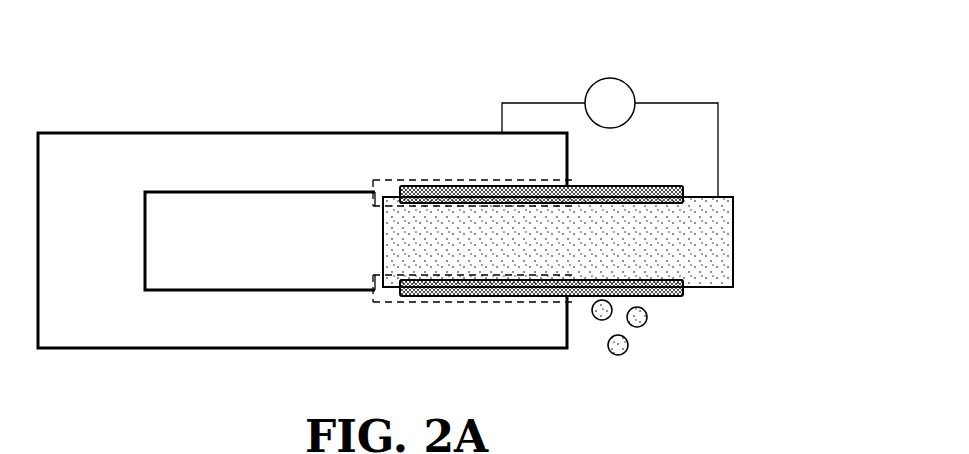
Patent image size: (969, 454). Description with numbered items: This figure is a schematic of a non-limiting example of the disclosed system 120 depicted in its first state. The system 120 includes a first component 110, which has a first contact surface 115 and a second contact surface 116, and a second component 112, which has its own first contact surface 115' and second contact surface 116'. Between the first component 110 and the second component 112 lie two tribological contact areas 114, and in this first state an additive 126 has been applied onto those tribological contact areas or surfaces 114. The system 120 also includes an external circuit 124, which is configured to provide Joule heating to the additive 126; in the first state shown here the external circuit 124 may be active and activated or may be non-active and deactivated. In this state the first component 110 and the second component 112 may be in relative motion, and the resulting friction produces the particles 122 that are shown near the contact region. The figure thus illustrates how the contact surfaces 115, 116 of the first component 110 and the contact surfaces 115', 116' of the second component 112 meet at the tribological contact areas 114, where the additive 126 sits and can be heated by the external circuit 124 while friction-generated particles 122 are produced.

The first component 110 is at (243, 131).
The second component 112 is at (733, 242).
The tribological contact areas 114 is at (373, 282).
The first contact surface 115 is at (456, 337).
The first contact surface 115' is at (541, 339).
The second contact surface 116 is at (456, 144).
The second contact surface 116' is at (541, 143).
The system 120 is at (678, 71).
The particles 122 is at (628, 348).
The external circuit 124 is at (720, 110).
The additive 126 is at (680, 186).